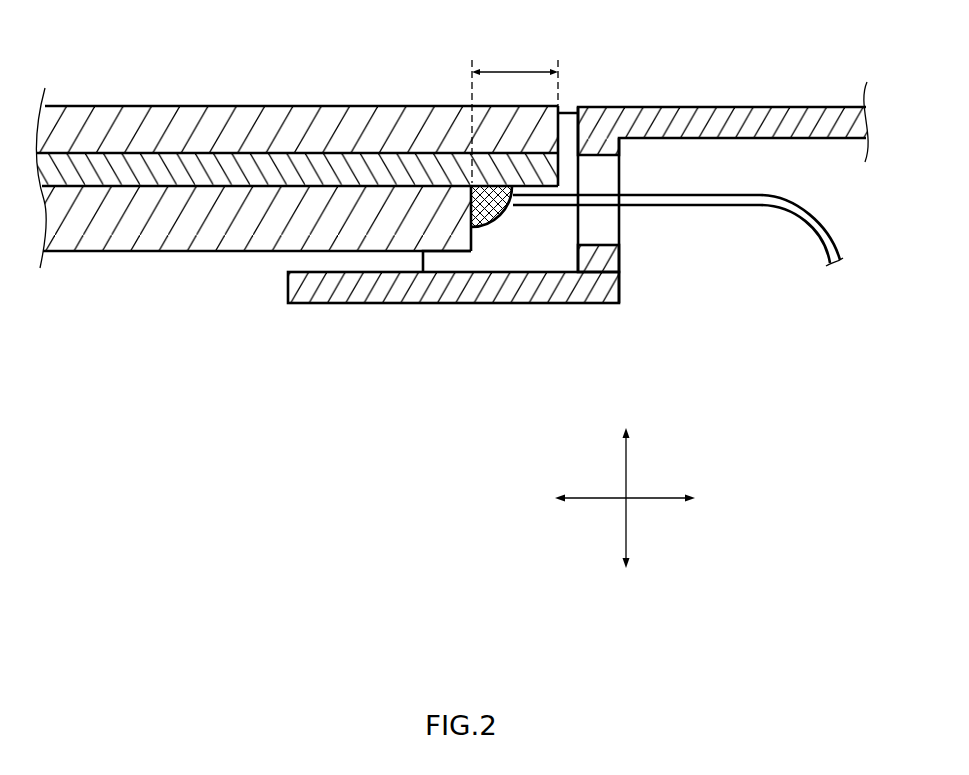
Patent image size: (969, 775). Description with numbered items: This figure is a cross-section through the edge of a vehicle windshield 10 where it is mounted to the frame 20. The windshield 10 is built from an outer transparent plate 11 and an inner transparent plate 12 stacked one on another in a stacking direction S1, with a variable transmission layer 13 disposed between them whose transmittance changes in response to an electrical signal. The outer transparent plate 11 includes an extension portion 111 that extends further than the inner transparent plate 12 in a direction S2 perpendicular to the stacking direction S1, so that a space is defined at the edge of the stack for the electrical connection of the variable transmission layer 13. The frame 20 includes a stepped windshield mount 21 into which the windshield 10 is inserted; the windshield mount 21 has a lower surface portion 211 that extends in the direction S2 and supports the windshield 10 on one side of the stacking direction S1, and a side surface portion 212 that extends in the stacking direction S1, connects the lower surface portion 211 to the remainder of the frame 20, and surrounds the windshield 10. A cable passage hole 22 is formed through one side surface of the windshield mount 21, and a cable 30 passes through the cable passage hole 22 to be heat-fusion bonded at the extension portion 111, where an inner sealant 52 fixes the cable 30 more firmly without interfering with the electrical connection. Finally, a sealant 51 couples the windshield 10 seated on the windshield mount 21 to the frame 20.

The windshield 10 is at (294, 169).
The outer transparent plate 11 is at (294, 105).
The inner transparent plate 12 is at (183, 240).
The variable transmission layer 13 is at (332, 165).
The extension portion 111 is at (513, 70).
The frame 20 is at (720, 118).
The windshield mount 21 is at (495, 305).
The lower surface portion 211 is at (383, 290).
The side surface portion 212 is at (610, 277).
The cable passage hole 22 is at (605, 179).
The cable 30 is at (813, 222).
The sealant 51 is at (570, 123).
The inner sealant 52 is at (497, 220).
The stacking direction S1 is at (626, 465).
The direction perpendicular to the stacking direction S2 is at (658, 498).